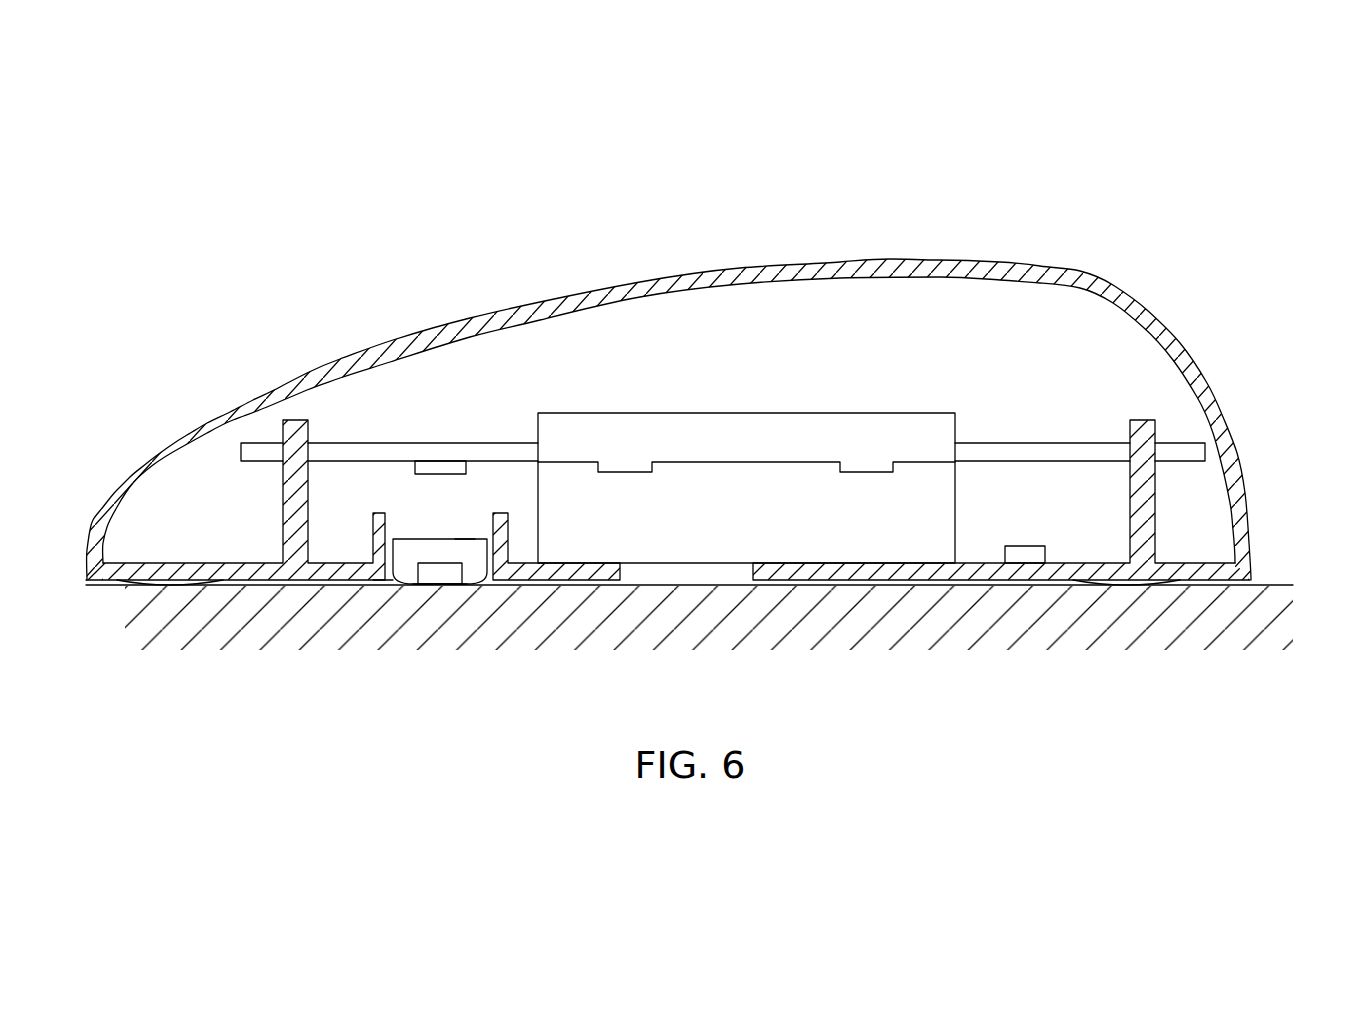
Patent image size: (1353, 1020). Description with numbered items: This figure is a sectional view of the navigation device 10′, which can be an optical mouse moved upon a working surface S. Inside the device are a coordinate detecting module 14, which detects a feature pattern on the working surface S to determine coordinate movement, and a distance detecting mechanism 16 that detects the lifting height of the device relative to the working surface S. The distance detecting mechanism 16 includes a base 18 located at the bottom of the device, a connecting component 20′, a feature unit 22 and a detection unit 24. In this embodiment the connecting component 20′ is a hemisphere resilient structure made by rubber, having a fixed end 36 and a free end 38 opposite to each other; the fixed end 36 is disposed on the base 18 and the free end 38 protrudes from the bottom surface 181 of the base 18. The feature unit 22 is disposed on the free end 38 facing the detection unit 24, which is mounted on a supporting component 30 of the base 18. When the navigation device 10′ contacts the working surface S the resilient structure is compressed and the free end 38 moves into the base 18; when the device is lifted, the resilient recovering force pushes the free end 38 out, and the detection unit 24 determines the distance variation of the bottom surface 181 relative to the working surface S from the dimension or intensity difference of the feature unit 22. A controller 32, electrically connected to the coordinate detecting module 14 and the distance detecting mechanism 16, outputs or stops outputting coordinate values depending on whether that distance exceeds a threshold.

The navigation device 10′ is at (1068, 167).
The coordinate detecting module 14 is at (724, 531).
The distance detecting mechanism 16 is at (537, 270).
The base 18 is at (343, 567).
The bottom surface 181 is at (387, 606).
The connecting component 20′ is at (442, 538).
The feature unit 22 is at (433, 570).
The detection unit 24 is at (445, 468).
The supporting component 30 is at (1042, 444).
The controller 32 is at (1026, 555).
The fixed end 36 is at (480, 515).
The free end 38 is at (477, 612).
The working surface S is at (706, 617).